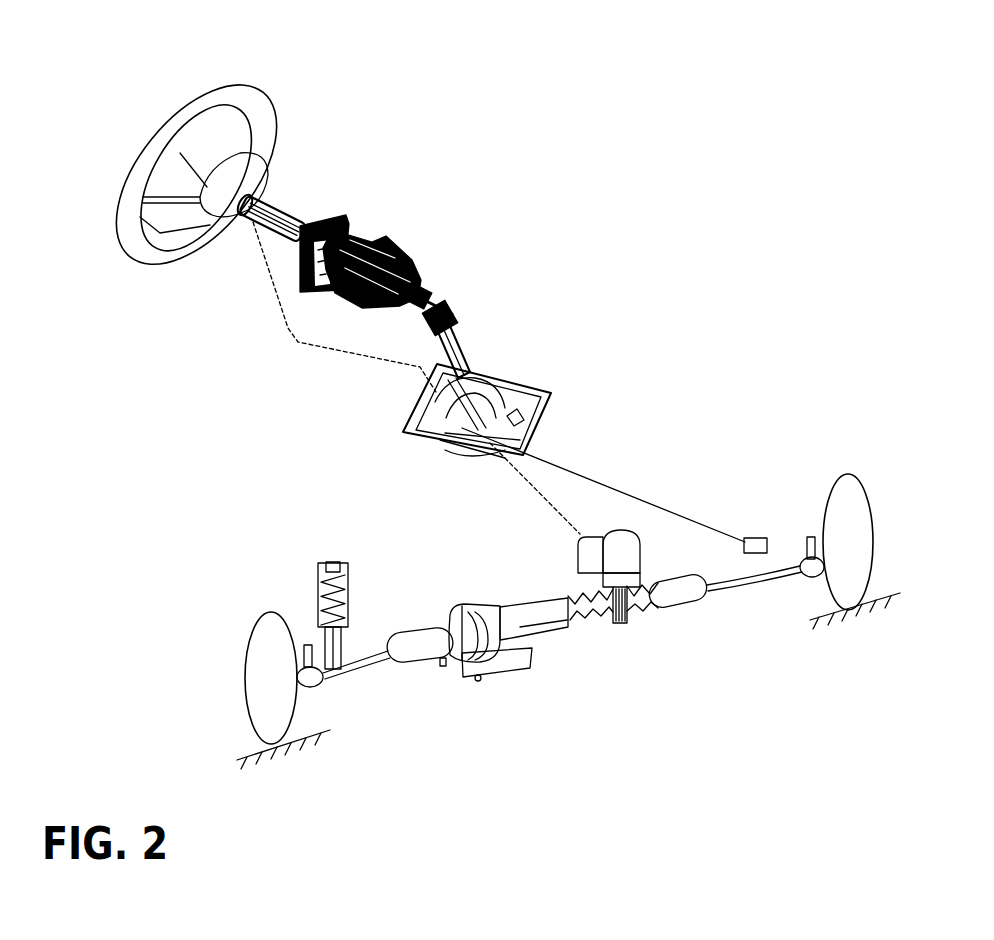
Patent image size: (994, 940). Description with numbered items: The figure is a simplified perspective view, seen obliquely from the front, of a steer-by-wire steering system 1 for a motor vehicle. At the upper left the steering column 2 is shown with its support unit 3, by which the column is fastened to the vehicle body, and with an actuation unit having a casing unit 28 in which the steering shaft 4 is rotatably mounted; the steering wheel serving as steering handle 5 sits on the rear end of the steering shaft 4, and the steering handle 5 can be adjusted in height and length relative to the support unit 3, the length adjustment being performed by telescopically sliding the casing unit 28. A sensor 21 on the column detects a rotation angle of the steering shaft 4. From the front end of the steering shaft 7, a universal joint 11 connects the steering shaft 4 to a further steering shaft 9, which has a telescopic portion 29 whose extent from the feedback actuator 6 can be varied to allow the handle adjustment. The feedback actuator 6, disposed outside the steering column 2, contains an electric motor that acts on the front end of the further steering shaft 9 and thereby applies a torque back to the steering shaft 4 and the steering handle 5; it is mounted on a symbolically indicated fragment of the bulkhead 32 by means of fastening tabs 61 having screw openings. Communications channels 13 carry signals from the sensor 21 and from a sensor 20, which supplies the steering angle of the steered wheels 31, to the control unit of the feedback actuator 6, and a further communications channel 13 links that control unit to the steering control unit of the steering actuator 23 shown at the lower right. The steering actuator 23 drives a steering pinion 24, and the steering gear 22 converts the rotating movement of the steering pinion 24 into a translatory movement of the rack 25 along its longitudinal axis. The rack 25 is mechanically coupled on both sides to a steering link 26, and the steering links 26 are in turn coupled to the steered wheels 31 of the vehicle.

The steer-by-wire steering system 1 is at (555, 142).
The steering column 2 is at (348, 183).
The support unit 3 is at (390, 246).
The steering shaft 4 is at (258, 200).
The steering handle 5 is at (262, 94).
The feedback actuator 6 is at (480, 408).
The front end of the steering shaft 7 is at (430, 280).
The further steering shaft 9 is at (462, 347).
The universal joint 11 is at (452, 308).
The communications channel 13 is at (287, 332).
The sensor 20 is at (760, 536).
The sensor 21 is at (256, 232).
The steering gear 22 is at (547, 647).
The steering actuator 23 is at (643, 547).
The steering pinion 24 is at (630, 612).
The rack 25 is at (588, 612).
The steering link 26 is at (350, 672).
The casing unit 28 is at (298, 226).
The telescopic portion 29 is at (470, 377).
The steered wheels 31 is at (256, 630).
The bulkhead 32 is at (528, 400).
The fastening tabs 61 is at (518, 412).